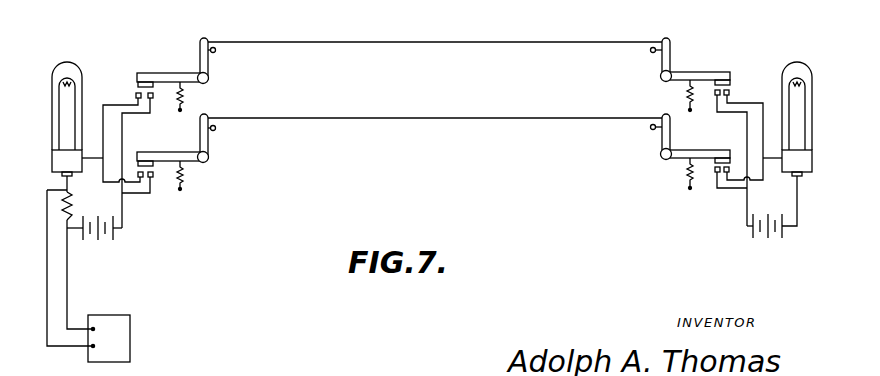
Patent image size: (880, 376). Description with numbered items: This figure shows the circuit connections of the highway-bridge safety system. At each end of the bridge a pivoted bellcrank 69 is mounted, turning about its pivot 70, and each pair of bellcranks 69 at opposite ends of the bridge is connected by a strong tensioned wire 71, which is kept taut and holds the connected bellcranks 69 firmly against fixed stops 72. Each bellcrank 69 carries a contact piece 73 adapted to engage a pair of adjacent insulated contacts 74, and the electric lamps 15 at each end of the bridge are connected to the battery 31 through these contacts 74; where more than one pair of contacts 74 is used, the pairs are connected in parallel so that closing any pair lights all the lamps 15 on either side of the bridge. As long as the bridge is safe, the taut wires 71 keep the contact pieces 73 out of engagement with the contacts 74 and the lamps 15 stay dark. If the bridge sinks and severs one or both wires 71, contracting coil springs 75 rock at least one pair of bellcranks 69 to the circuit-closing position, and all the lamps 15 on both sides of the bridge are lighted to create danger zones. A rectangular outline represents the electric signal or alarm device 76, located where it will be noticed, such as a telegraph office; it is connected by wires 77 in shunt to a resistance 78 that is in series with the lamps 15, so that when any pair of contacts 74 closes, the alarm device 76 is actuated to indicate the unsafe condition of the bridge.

The electric lamp 15 is at (80, 65).
The battery 31 is at (95, 242).
The bellcrank 69 is at (167, 73).
The pivot 70 is at (209, 78).
The wire 71 is at (425, 42).
The fixed stop 72 is at (216, 50).
The contact piece 73 is at (139, 84).
The insulated contacts 74 is at (135, 95).
The coil spring 75 is at (184, 97).
The signal device 76 is at (109, 338).
The wires 77 is at (48, 286).
The resistance 78 is at (73, 206).